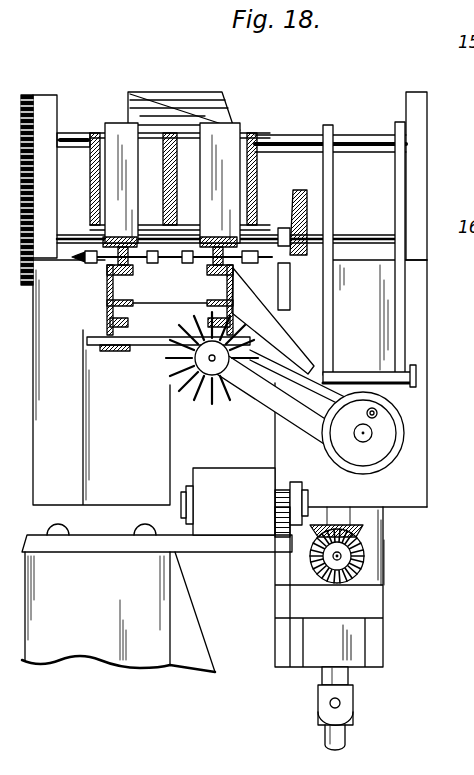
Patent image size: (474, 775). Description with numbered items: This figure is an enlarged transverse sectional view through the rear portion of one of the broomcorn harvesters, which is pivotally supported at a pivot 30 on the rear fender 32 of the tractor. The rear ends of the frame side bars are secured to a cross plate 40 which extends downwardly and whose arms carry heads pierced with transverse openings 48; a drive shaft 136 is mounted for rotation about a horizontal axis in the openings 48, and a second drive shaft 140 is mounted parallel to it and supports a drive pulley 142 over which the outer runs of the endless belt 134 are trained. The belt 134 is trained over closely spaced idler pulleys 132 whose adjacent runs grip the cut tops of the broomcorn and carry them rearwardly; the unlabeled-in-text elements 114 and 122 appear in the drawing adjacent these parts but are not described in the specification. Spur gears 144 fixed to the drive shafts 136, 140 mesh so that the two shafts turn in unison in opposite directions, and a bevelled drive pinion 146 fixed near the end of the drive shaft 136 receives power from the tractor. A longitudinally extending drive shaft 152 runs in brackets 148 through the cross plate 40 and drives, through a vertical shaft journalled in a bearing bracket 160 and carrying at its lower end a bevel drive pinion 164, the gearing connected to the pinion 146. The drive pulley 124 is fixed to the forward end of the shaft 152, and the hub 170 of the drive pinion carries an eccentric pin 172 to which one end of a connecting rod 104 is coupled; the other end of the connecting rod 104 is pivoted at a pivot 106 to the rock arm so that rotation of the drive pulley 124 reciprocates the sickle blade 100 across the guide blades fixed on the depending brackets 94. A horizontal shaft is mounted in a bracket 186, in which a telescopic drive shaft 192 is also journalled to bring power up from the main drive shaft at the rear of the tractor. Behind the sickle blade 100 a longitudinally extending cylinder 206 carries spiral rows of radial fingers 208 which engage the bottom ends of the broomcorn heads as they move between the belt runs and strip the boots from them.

The pivot 30 is at (307, 502).
The rear fender 32 is at (102, 657).
The cross plate 40 is at (110, 482).
The transverse opening 48 is at (47, 97).
The bracket 94 is at (107, 328).
The sickle blade 100 is at (150, 337).
The connecting rod 104 is at (302, 373).
The pivot 106 is at (258, 348).
The bracket 114 is at (247, 137).
The support frame 122 is at (403, 287).
The drive pulley 124 is at (385, 460).
The idler pulley 132 is at (153, 133).
The endless belt 134 is at (178, 143).
The drive shaft 136 is at (360, 233).
The drive shaft 140 is at (345, 133).
The drive pulley 142 is at (127, 98).
The spur gear 144 is at (33, 160).
The bevelled drive pinion 146 is at (298, 192).
The bracket 148 is at (295, 350).
The drive shaft 152 is at (372, 432).
The bearing bracket 160 is at (363, 563).
The bevel drive pinion 164 is at (365, 530).
The hub 170 is at (377, 447).
The eccentric pin 172 is at (380, 408).
The bracket 186 is at (363, 637).
The telescopic drive shaft 192 is at (345, 737).
The cylinder 206 is at (182, 393).
The radial finger 208 is at (168, 362).